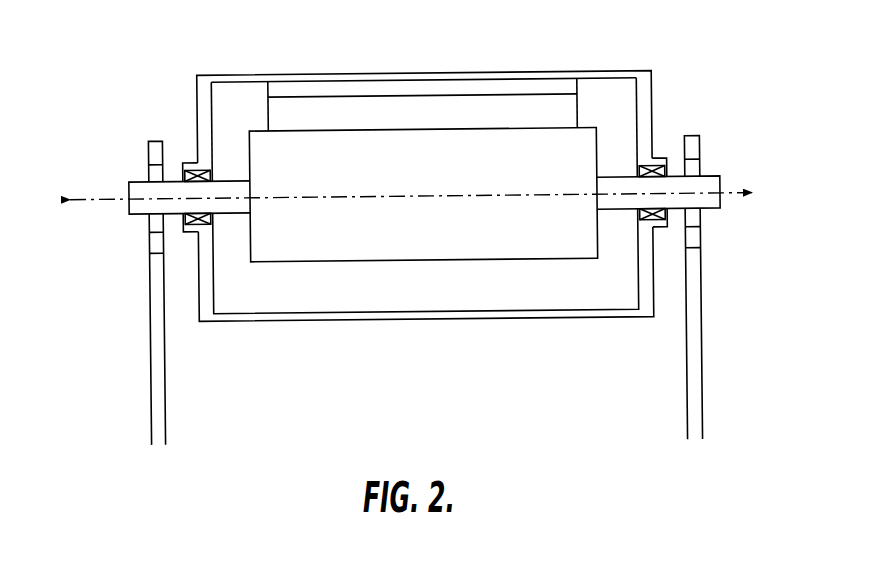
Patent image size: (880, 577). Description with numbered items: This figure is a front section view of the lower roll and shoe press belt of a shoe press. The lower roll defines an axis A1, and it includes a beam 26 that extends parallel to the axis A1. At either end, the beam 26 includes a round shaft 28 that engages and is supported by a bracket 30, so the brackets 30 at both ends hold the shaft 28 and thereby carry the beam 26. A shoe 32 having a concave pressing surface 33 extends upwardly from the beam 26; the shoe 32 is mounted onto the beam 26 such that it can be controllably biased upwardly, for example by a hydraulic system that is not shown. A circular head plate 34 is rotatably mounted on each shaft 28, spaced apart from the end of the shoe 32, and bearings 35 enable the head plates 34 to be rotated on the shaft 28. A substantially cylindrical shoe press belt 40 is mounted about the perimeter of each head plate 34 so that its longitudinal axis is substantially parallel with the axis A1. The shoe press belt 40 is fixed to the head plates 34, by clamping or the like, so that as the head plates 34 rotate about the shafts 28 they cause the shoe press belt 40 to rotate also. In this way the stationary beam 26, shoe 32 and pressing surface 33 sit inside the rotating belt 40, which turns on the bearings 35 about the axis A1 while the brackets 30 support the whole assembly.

The beam 26 is at (584, 162).
The round shaft 28 is at (177, 188).
The bracket 30 is at (152, 334).
The shoe 32 is at (576, 89).
The concave pressing surface 33 is at (294, 81).
The circular head plate 34 is at (200, 254).
The bearings 35 is at (200, 216).
The shoe press belt 40 is at (594, 74).
The axis A1 is at (415, 197).